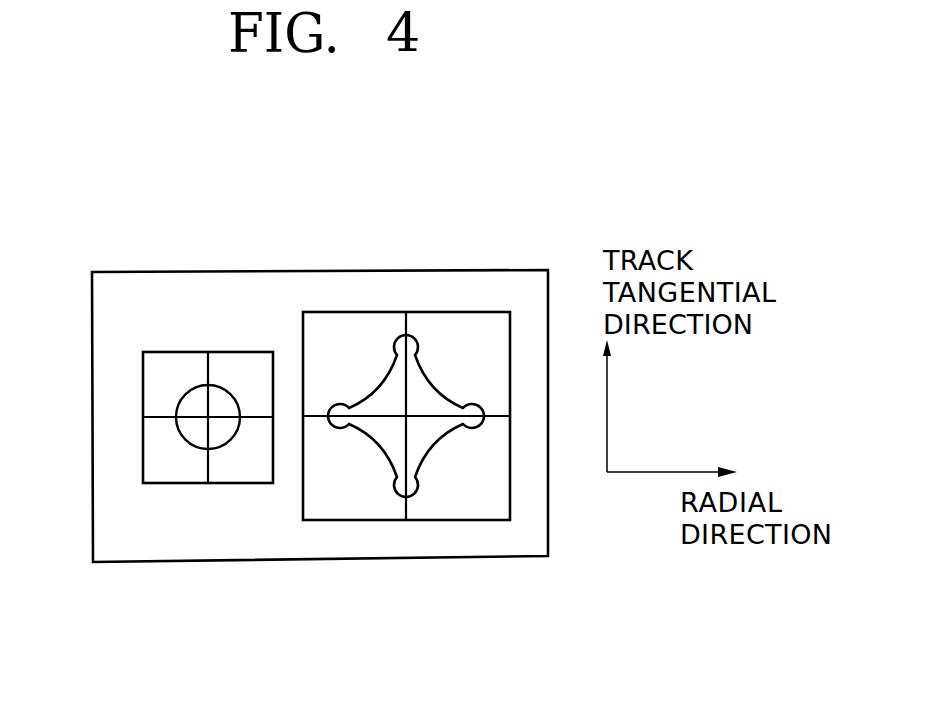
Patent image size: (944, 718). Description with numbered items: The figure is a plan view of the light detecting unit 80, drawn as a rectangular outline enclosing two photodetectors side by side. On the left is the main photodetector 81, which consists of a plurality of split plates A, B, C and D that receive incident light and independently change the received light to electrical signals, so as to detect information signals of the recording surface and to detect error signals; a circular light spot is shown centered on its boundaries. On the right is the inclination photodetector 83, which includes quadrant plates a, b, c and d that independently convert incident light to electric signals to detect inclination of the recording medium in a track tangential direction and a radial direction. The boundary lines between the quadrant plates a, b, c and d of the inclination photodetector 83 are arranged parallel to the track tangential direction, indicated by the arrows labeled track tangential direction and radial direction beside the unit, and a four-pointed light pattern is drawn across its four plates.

The light detecting unit 80 is at (188, 242).
The main photodetector 81 is at (143, 429).
The inclination photodetector 83 is at (458, 312).